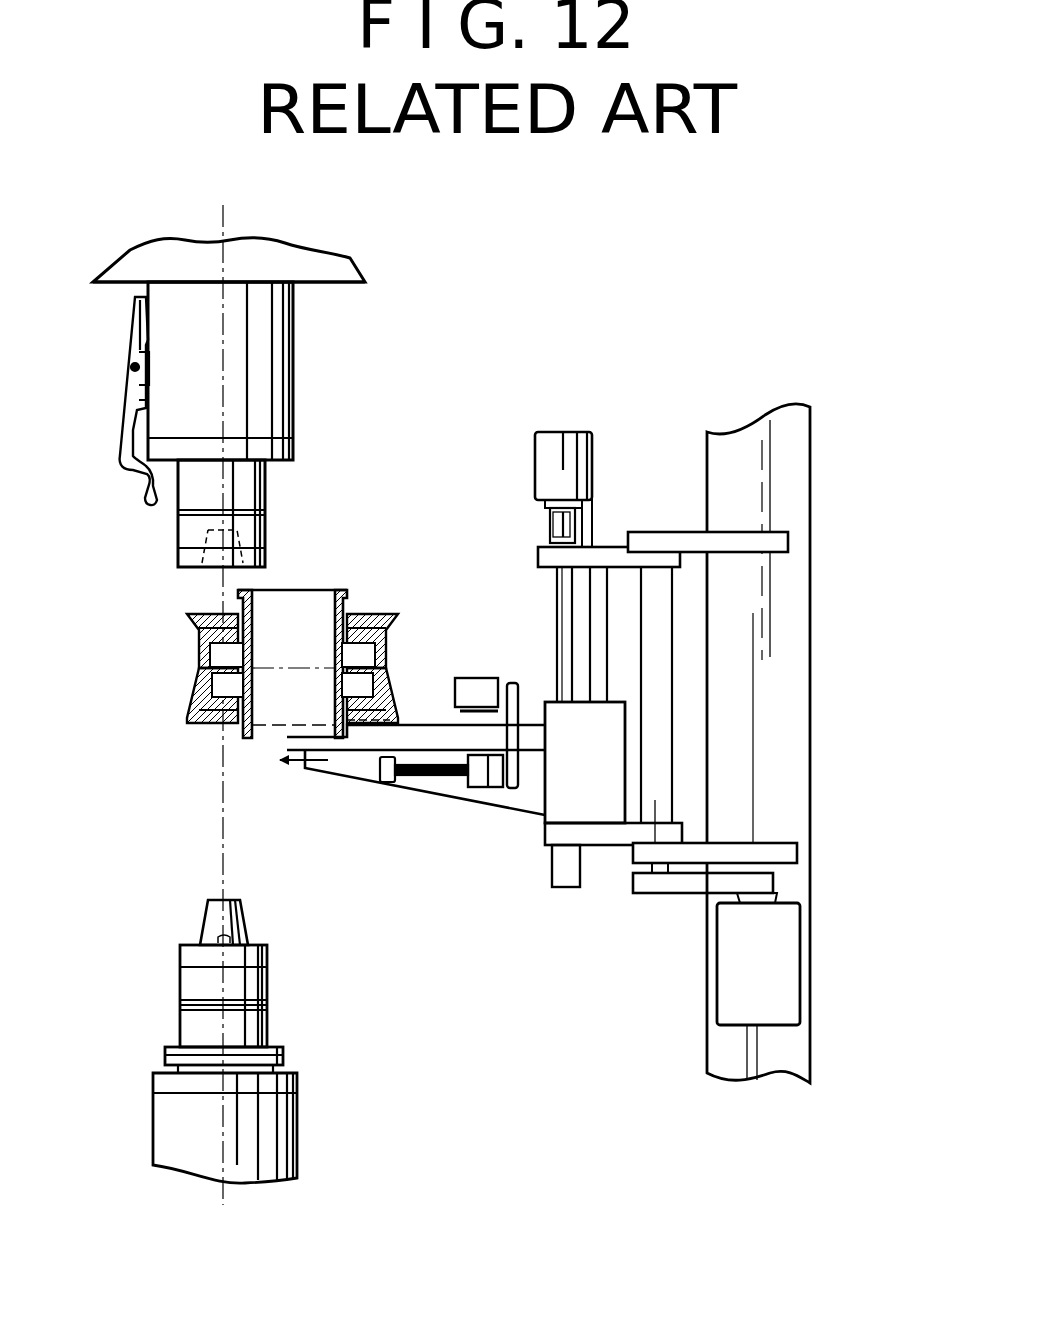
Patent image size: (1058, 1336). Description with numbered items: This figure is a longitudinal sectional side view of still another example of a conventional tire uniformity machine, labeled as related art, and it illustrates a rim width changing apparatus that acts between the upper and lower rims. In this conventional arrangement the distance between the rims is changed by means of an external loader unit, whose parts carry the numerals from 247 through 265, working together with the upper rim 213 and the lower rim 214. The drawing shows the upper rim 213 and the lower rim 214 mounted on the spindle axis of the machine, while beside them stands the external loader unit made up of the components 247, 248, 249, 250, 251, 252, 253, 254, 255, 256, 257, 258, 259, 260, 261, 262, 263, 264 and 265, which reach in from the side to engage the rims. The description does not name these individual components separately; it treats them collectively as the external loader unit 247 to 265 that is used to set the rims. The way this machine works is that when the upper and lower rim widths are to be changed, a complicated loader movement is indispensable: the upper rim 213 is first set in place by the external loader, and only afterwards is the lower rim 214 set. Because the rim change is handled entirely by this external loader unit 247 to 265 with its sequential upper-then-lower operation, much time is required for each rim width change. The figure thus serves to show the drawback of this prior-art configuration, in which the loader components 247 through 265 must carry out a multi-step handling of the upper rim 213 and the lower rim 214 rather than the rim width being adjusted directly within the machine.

The upper rim 213 is at (200, 637).
The lower rim 214 is at (200, 695).
The external loader unit component 247 is at (370, 738).
The external loader unit component 248 is at (330, 768).
The external loader unit component 249 is at (432, 782).
The external loader unit component 250 is at (413, 775).
The external loader unit component 251 is at (477, 775).
The external loader unit component 252 is at (452, 690).
The external loader unit component 253 is at (515, 682).
The external loader unit component 254 is at (557, 787).
The external loader unit component 255 is at (612, 555).
The external loader unit component 256 is at (602, 682).
The external loader unit component 257 is at (555, 612).
The external loader unit component 258 is at (580, 432).
The external loader unit component 259 is at (546, 586).
The external loader unit component 260 is at (780, 597).
The external loader unit component 261 is at (788, 540).
The external loader unit component 262 is at (658, 817).
The external loader unit component 263 is at (760, 883).
The external loader unit component 264 is at (783, 997).
The external loader unit component 265 is at (565, 875).